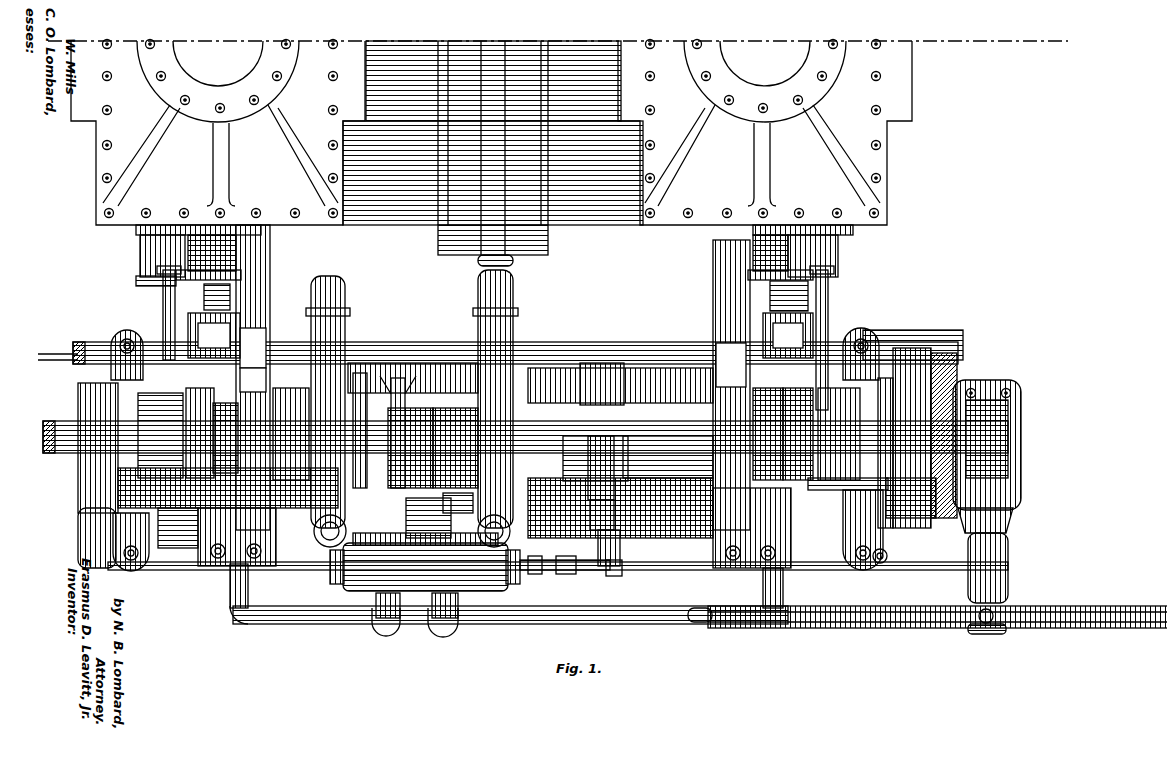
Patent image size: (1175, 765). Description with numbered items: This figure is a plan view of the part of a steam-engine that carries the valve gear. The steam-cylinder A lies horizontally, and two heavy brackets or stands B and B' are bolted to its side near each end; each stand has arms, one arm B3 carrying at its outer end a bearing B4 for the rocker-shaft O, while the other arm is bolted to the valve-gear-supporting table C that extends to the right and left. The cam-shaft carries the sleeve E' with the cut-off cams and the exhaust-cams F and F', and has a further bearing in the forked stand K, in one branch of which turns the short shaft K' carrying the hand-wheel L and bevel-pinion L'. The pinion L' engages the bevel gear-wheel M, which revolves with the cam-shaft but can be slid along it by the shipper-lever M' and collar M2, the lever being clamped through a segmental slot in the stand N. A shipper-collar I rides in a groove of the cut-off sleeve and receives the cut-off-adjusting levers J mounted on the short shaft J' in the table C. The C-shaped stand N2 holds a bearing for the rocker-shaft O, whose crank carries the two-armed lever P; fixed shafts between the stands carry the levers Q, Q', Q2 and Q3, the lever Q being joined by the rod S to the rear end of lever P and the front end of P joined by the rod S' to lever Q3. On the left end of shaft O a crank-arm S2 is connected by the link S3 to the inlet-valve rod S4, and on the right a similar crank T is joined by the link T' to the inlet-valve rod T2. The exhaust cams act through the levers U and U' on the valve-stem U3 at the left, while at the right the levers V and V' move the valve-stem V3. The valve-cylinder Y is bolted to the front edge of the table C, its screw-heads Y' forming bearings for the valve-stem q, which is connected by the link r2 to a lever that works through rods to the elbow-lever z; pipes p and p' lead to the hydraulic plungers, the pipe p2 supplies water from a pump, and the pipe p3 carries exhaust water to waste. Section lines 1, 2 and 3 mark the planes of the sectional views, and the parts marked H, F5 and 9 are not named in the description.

The section line 1 is at (592, 600).
The section line 2 is at (363, 334).
The section line 3 is at (457, 334).
The bolt 9 is at (881, 556).
The steam-cylinder A is at (390, 205).
The bracket or stand B is at (253, 377).
The bracket or stand B' is at (711, 399).
The arm of stand B3 is at (253, 348).
The bearing B4 is at (253, 380).
The valve-gear-supporting table C is at (620, 459).
The sleeve E' is at (668, 457).
The exhaust-cam F is at (798, 434).
The exhaust-cam F' is at (158, 435).
The gear F5 is at (839, 434).
The hub H is at (595, 458).
The shipper-collar I is at (601, 468).
The cut-off-adjusting levers J is at (602, 448).
The short shaft J' is at (617, 548).
The stand K is at (991, 491).
The short shaft K' is at (987, 633).
The hand-wheel L is at (937, 617).
The bevel-pinion L' is at (999, 520).
The bevel gear-wheel M is at (952, 447).
The shipper-lever M' is at (906, 445).
The collar M2 is at (920, 520).
The stand N is at (328, 402).
The C-shaped stand N2 is at (495, 399).
The rocker-shaft O is at (432, 434).
The two-armed lever P is at (410, 448).
The lever Q is at (427, 457).
The shorter lever Q' is at (458, 503).
The lever Q2 is at (357, 430).
The lever Q3 is at (413, 382).
The rod S is at (614, 574).
The rod S' is at (207, 274).
The crank-arm S2 is at (196, 290).
The link S3 is at (214, 335).
The inlet-valve rod S4 is at (428, 518).
The crank T is at (768, 434).
The link T' is at (788, 335).
The inlet-valve rod T2 is at (790, 285).
The lever U is at (127, 353).
The lever U' is at (154, 542).
The valve-stem U3 is at (155, 300).
The lever V is at (861, 350).
The lever V' is at (854, 530).
The valve-stem V3 is at (820, 300).
The valve-cylinder Y is at (425, 562).
The screw-heads Y' is at (424, 573).
The pipe p is at (514, 601).
The pipe p' is at (273, 594).
The pipe p2 is at (347, 601).
The pipe p3 is at (477, 601).
The valve-stem q is at (559, 581).
The link r2 is at (566, 558).
The elbow-lever z is at (78, 568).